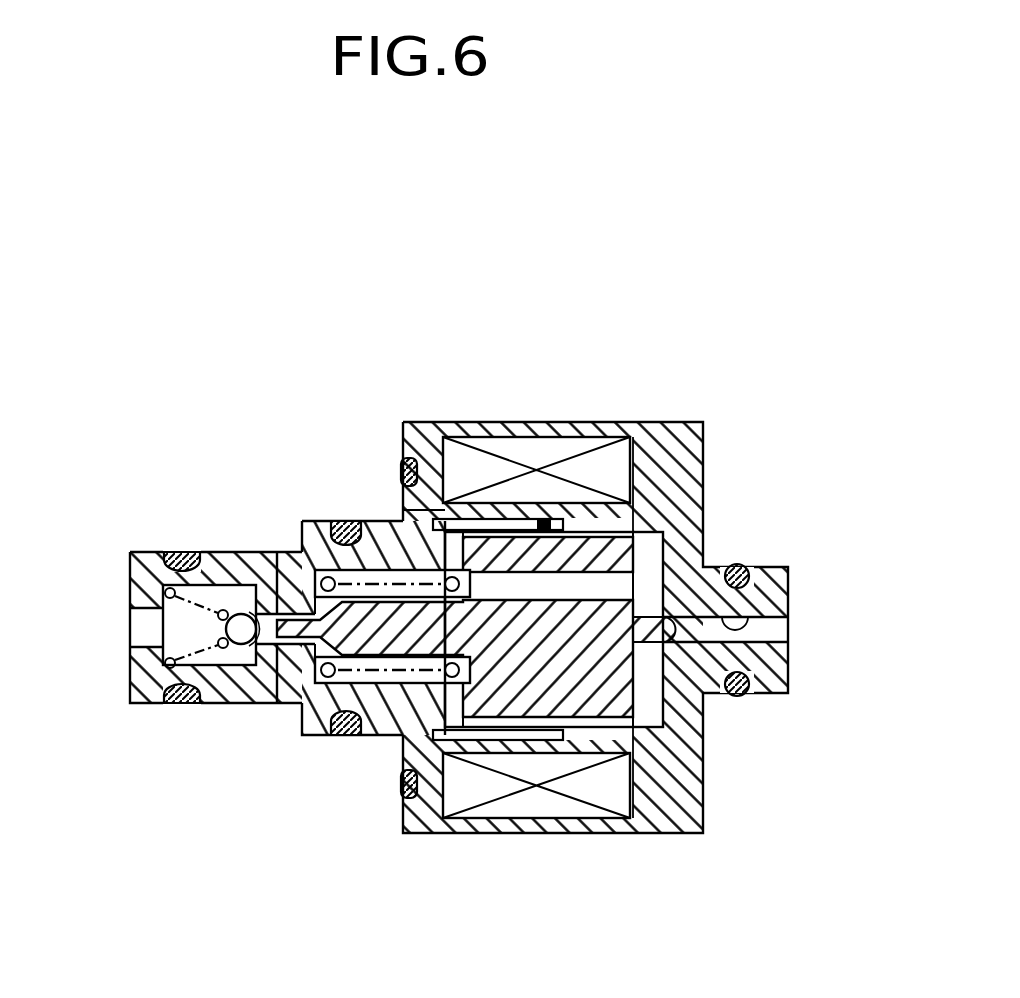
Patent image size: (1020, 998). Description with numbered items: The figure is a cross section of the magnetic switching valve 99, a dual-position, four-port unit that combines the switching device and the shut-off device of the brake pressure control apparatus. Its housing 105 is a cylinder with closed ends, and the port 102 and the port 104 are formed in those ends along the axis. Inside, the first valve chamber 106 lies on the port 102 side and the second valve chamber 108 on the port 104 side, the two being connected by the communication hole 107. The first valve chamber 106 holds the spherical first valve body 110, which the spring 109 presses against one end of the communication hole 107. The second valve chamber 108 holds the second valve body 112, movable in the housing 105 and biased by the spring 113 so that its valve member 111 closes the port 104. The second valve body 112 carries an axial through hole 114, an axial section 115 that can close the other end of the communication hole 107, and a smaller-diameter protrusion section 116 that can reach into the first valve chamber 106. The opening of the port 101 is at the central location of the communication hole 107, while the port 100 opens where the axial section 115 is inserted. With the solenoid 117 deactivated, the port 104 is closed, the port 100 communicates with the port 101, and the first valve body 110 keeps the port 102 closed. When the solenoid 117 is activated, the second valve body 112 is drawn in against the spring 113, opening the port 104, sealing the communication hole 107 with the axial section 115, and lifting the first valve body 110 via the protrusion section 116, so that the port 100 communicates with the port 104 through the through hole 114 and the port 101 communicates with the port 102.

The magnetic switching valve 99 is at (766, 356).
The port 100 is at (392, 516).
The port 101 is at (281, 705).
The port 102 is at (130, 627).
The port 104 is at (753, 612).
The housing 105 is at (421, 420).
The first valve chamber 106 is at (230, 584).
The communication hole 107 is at (281, 551).
The second valve chamber 108 is at (650, 545).
The spring 109 is at (210, 706).
The first valve body 110 is at (241, 645).
The valve member 111 is at (650, 645).
The second valve body 112 is at (542, 516).
The spring 113 is at (397, 740).
The through hole 114 is at (576, 572).
The axial section 115 is at (365, 738).
The protrusion section 116 is at (322, 518).
The solenoid 117 is at (535, 805).